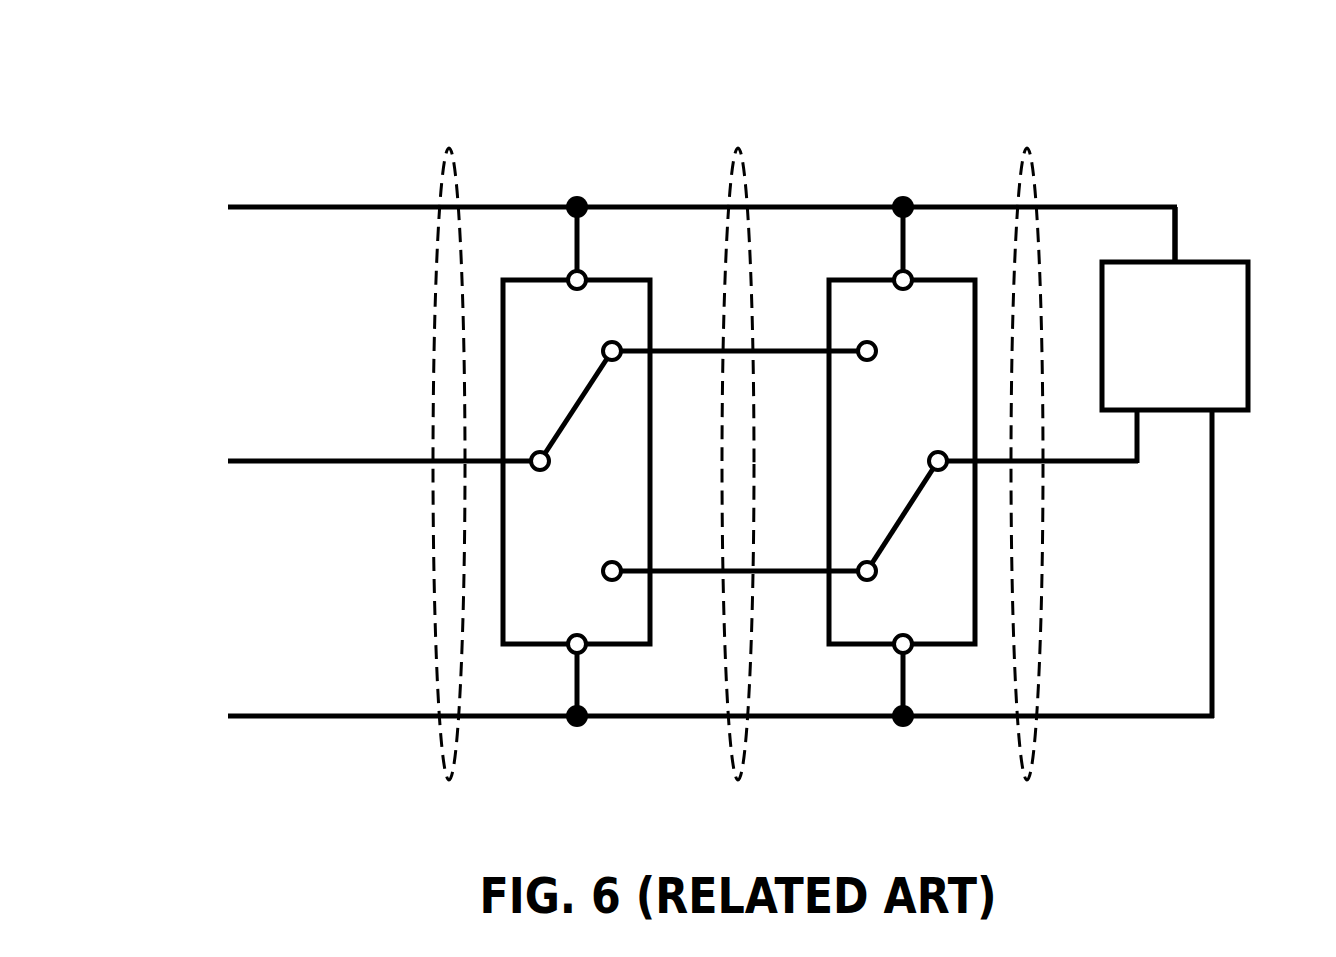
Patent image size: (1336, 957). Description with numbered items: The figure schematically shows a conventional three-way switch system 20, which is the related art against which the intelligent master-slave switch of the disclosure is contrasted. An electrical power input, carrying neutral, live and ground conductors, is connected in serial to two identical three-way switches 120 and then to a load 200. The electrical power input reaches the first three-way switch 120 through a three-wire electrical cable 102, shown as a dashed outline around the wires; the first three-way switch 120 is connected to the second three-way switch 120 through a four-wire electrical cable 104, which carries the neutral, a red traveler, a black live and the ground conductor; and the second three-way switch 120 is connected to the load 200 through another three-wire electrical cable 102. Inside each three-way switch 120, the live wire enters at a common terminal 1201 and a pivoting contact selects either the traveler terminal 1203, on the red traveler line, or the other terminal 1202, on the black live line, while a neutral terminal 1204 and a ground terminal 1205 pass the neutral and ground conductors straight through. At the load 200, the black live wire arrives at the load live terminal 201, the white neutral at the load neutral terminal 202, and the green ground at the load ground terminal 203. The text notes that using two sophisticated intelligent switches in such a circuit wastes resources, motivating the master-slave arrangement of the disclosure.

The related art three-way switch wiring system 20 is at (148, 68).
The three-wire electrical cable 102 is at (437, 175).
The four-wire electrical cable 104 is at (727, 175).
The three-way switch 120 is at (527, 280).
The load 200 is at (1197, 260).
The load live terminal 201 is at (1082, 461).
The load neutral terminal 202 is at (1171, 244).
The load ground terminal 203 is at (1215, 438).
The common live terminal 1201 is at (549, 466).
The traveler terminal (live black) 1202 is at (603, 577).
The traveler terminal (red) 1203 is at (603, 359).
The neutral terminal 1204 is at (577, 289).
The ground terminal 1205 is at (570, 651).